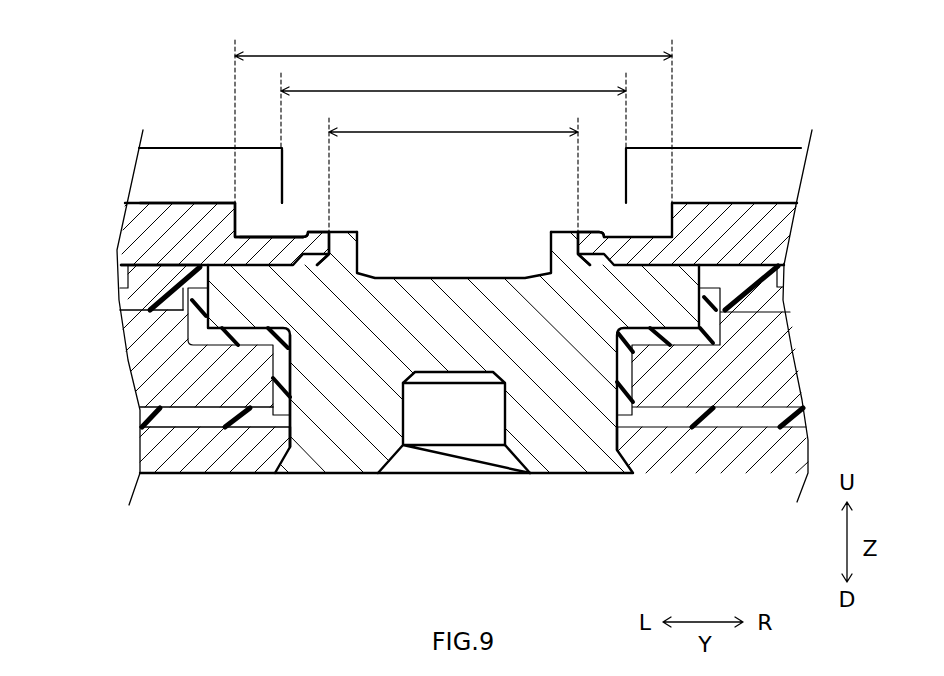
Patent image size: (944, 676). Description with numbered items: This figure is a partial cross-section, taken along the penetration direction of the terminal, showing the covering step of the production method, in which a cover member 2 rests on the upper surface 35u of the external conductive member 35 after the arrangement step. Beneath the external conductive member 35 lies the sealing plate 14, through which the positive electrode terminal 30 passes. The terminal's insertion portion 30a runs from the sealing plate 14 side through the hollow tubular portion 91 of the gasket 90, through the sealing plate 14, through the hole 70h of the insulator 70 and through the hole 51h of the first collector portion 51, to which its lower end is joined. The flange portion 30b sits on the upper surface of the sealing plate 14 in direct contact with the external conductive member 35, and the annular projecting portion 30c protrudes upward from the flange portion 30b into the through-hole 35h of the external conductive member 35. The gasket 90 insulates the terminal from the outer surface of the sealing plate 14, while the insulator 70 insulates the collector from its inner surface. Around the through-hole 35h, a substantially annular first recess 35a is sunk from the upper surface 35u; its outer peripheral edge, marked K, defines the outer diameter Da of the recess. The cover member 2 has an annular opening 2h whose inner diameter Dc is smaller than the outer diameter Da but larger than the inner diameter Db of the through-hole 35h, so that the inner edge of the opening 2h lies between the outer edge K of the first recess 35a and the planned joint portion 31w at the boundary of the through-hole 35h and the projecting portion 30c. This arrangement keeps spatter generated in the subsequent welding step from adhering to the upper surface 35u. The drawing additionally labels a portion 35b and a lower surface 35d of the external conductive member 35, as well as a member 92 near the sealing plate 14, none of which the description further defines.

The cover member 2 is at (176, 144).
The opening 2h is at (287, 173).
The outer diameter of the first recess Da is at (453, 134).
The inner diameter of the opening Dc is at (453, 107).
The inner diameter of the through-hole Db is at (453, 170).
The external conductive member 35 is at (808, 234).
The upper surface of the external conductive member 35u is at (145, 202).
The outer peripheral edge of the first recess K is at (235, 220).
The first recess 35a is at (305, 212).
The lip portion 35b is at (320, 231).
The joint portion 31w is at (578, 231).
The lower surface of plate 35d is at (157, 266).
The sealing plate 14 is at (818, 355).
The through-hole 35h is at (357, 245).
The positive electrode terminal 30 is at (497, 405).
The insertion portion 30a is at (520, 410).
The projecting portion 30c is at (565, 250).
The flange portion 30b is at (615, 310).
The tubular portion 91 is at (300, 375).
The gasket 90 is at (202, 320).
The first collector portion 51 is at (173, 450).
The hole of the first collector portion 51h is at (290, 440).
The seal 92 is at (800, 298).
The insulator 70 is at (725, 445).
The hole of the insulator 70h is at (617, 442).